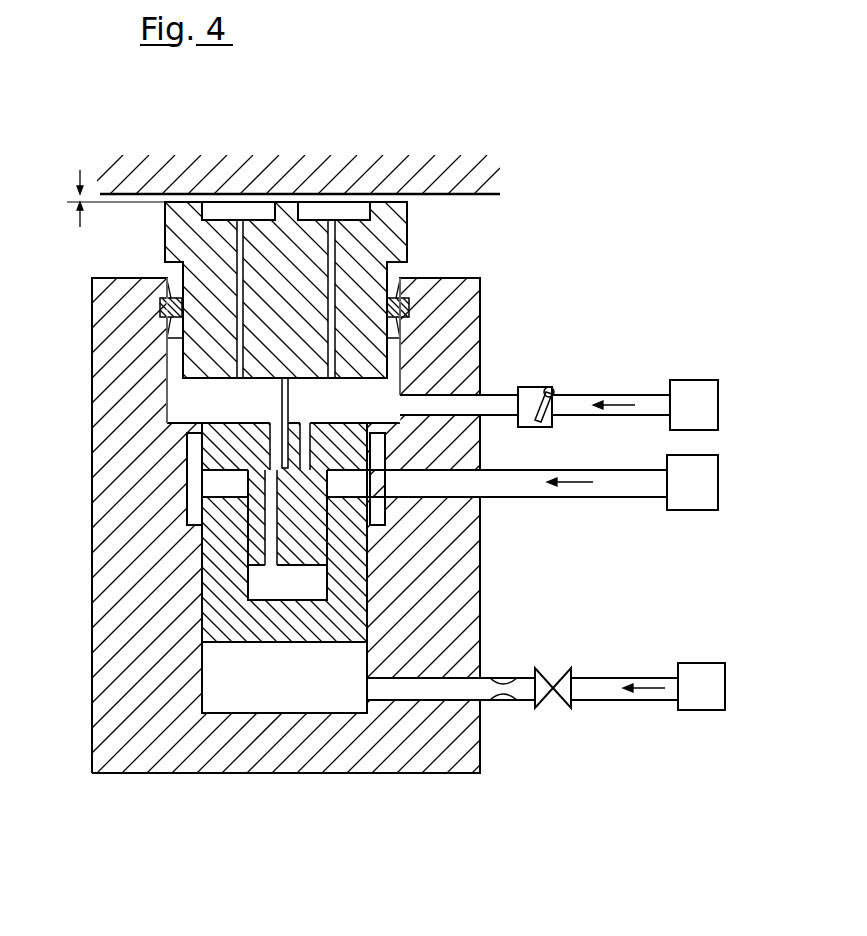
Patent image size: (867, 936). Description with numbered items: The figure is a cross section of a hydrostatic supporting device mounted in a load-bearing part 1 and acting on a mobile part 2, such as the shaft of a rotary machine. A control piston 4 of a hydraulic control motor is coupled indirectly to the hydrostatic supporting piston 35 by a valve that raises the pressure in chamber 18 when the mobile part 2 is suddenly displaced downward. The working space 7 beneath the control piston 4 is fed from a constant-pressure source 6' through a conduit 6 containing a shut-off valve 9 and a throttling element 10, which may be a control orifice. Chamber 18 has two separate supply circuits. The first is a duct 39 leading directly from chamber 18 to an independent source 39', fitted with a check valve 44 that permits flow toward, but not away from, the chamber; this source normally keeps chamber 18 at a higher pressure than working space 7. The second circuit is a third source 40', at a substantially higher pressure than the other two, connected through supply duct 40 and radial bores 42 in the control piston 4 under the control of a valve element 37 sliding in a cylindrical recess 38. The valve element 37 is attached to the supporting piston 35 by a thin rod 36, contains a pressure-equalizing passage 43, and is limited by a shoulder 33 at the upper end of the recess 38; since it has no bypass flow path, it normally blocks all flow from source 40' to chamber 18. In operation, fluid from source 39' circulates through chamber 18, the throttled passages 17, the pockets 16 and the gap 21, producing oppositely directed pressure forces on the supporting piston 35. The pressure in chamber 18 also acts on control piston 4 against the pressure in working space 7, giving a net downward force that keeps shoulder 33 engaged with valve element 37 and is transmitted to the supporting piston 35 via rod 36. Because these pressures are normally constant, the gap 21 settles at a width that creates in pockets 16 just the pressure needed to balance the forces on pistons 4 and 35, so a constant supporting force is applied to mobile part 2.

The load-bearing part 1 is at (107, 717).
The mobile part 2 is at (454, 178).
The control piston 4 is at (357, 592).
The conduit 6 is at (624, 661).
The source of hydraulic fluid 6' is at (695, 715).
The working space 7 is at (292, 684).
The shut-off valve 9 is at (548, 668).
The throttling element 10 is at (503, 700).
The pockets 16 is at (308, 213).
The throttled passages 17 is at (235, 245).
The chamber 18 is at (373, 413).
The gap 21 is at (70, 200).
The shoulder 33 is at (313, 440).
The supporting piston 35 is at (397, 238).
The thin rod 36 is at (280, 396).
The valve element 37 is at (288, 550).
The cylindrical recess 38 is at (247, 584).
The duct 39 is at (535, 356).
The source of hydraulic fluid 39' is at (709, 364).
The supply duct 40 is at (497, 504).
The source of hydraulic fluid 40' is at (698, 516).
The radial bores 42 is at (213, 478).
The pressure-equalizing passage 43 is at (267, 535).
The check valve 44 is at (530, 387).